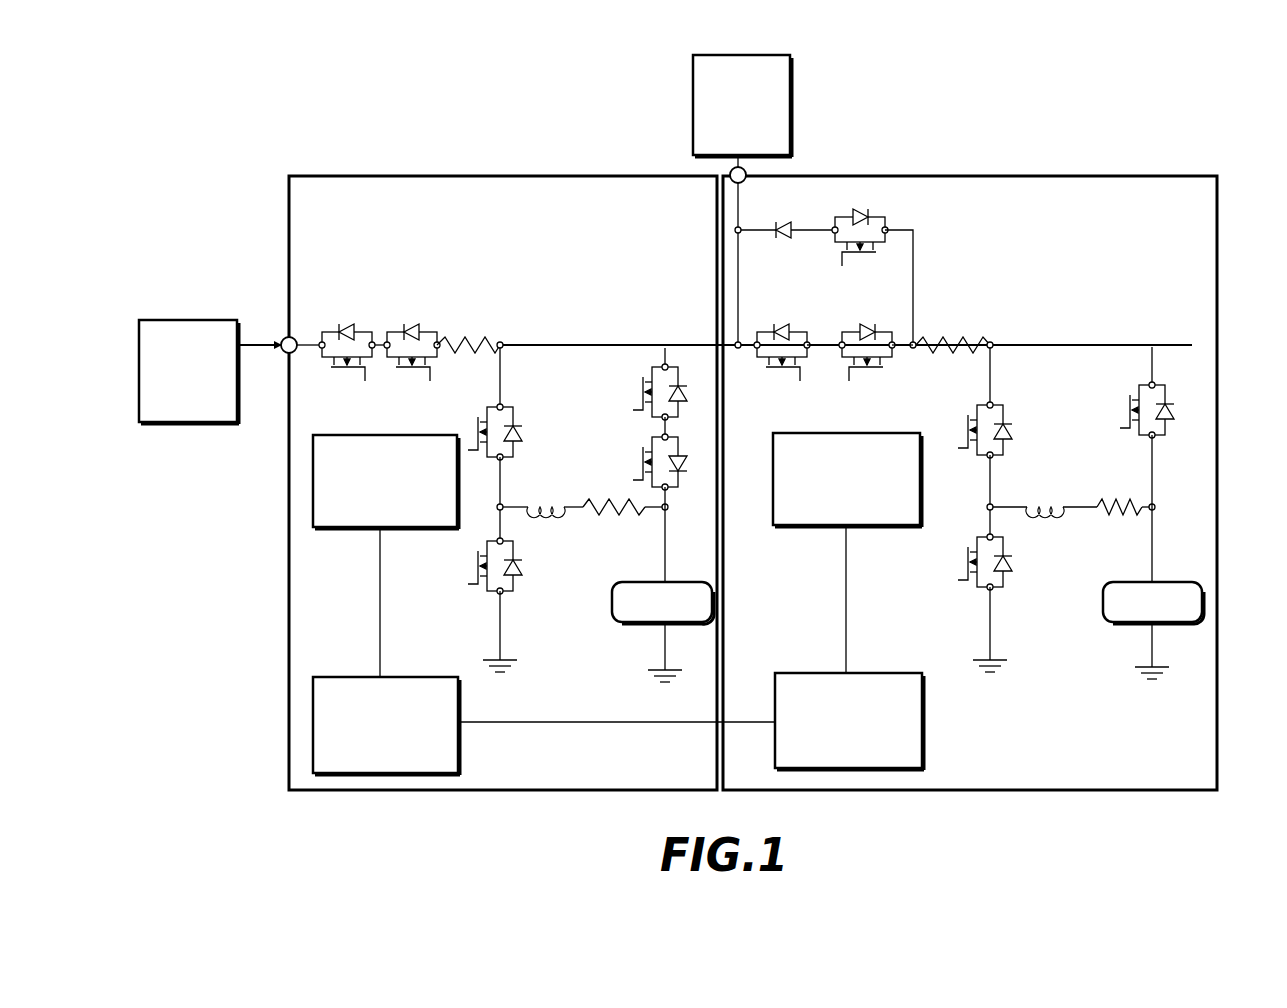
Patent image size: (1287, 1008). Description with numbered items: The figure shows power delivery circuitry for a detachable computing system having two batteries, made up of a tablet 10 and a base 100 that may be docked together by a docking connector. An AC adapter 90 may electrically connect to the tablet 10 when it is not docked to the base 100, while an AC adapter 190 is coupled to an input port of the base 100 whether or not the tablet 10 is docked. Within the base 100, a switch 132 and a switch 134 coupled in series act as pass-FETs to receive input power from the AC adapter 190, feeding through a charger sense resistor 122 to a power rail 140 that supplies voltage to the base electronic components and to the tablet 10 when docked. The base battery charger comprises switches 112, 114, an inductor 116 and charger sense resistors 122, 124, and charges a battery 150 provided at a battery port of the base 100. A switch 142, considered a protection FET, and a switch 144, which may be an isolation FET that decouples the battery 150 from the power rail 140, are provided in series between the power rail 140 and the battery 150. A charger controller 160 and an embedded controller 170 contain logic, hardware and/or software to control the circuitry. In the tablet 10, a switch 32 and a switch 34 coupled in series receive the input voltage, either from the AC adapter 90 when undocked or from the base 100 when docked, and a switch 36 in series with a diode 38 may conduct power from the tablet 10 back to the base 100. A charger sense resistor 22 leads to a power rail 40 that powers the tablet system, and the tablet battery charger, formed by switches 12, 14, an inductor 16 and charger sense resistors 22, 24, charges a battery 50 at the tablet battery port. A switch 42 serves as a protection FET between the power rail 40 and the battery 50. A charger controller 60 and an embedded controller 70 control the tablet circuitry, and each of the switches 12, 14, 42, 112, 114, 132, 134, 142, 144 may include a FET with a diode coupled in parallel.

The tablet 10 is at (1045, 176).
The switch 12 is at (1012, 430).
The switch 14 is at (1012, 561).
The inductor 16 is at (1037, 506).
The charger sense resistor 22 is at (953, 344).
The charger sense resistor 24 is at (1105, 506).
The switch 32 is at (793, 326).
The switch 34 is at (852, 326).
The switch 36 is at (864, 210).
The diode 38 is at (786, 239).
The power rail 40 is at (1105, 345).
The switch 42 is at (1130, 411).
The battery 50 is at (1178, 581).
The charger controller 60 is at (856, 433).
The embedded controller 70 is at (877, 673).
The AC adapter 90 is at (792, 101).
The base 100 is at (455, 176).
The switch 112 is at (522, 431).
The switch 114 is at (524, 569).
The inductor 116 is at (530, 506).
The charger sense resistor 122 is at (470, 343).
The charger sense resistor 124 is at (607, 515).
The switch 132 is at (343, 325).
The switch 134 is at (407, 325).
The power rail 140 is at (613, 343).
The switch 142 is at (641, 398).
The switch 144 is at (644, 472).
The battery 150 is at (632, 624).
The charger controller 160 is at (369, 435).
The embedded controller 170 is at (408, 677).
The AC adapter 190 is at (200, 422).